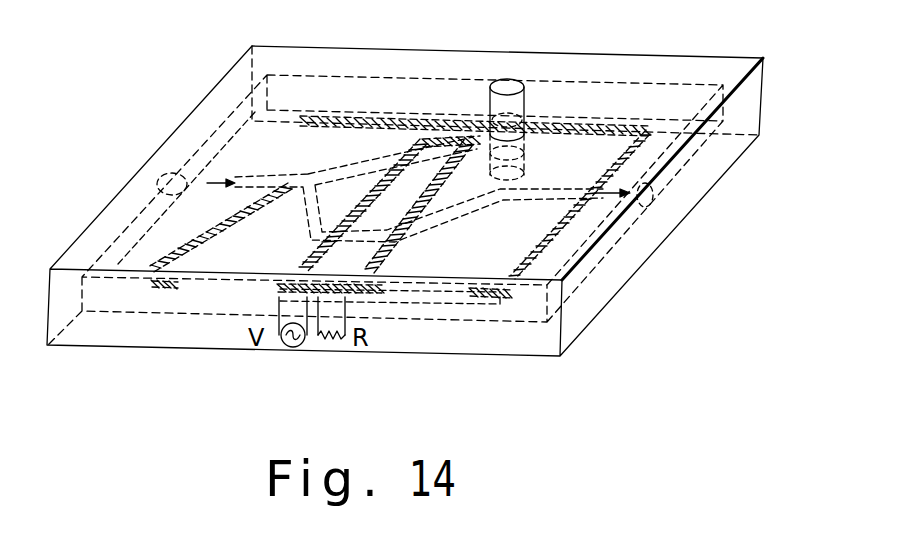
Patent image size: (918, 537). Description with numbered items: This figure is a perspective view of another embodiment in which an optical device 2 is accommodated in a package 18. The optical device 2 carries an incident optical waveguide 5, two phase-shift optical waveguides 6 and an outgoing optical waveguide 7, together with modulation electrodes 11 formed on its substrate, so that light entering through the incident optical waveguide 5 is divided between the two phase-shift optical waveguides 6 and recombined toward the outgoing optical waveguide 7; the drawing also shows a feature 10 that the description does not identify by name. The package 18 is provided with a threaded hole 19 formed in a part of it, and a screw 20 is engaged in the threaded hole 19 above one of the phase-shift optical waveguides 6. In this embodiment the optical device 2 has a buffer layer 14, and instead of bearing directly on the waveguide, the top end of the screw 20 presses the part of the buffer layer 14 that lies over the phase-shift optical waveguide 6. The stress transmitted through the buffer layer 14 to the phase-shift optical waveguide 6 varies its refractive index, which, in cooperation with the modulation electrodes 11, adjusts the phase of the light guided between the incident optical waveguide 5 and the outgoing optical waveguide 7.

The optical device 2 is at (600, 146).
The incident optical waveguide 5 is at (283, 183).
The phase-shift optical waveguide 6 is at (392, 140).
The outgoing optical waveguide 7 is at (563, 188).
The outlet reservoir 10 is at (661, 198).
The modulation electrodes 11 is at (443, 138).
The buffer layer 14 is at (558, 226).
The package 18 is at (757, 90).
The threaded hole 19 is at (525, 120).
The screw 20 is at (498, 123).